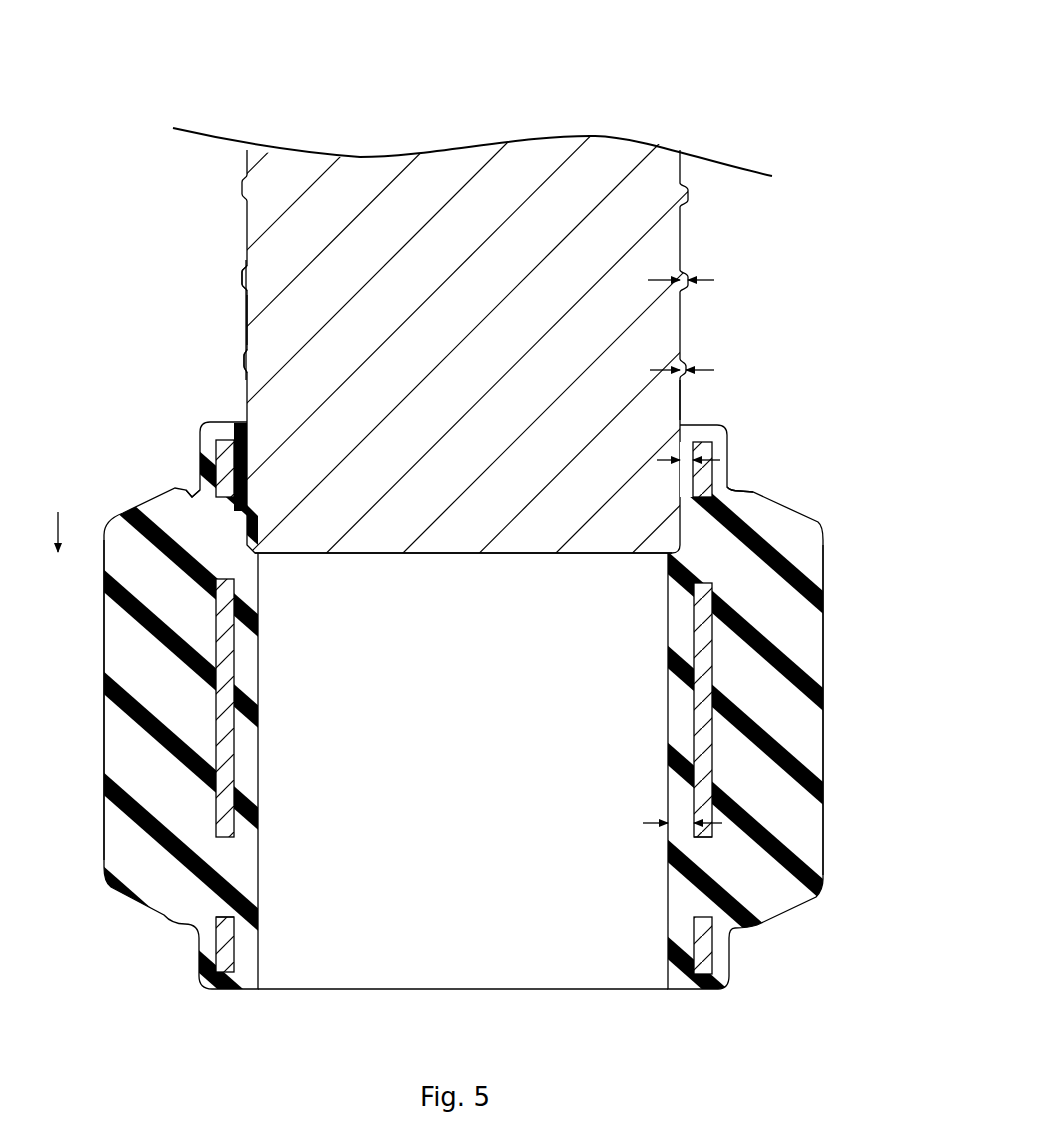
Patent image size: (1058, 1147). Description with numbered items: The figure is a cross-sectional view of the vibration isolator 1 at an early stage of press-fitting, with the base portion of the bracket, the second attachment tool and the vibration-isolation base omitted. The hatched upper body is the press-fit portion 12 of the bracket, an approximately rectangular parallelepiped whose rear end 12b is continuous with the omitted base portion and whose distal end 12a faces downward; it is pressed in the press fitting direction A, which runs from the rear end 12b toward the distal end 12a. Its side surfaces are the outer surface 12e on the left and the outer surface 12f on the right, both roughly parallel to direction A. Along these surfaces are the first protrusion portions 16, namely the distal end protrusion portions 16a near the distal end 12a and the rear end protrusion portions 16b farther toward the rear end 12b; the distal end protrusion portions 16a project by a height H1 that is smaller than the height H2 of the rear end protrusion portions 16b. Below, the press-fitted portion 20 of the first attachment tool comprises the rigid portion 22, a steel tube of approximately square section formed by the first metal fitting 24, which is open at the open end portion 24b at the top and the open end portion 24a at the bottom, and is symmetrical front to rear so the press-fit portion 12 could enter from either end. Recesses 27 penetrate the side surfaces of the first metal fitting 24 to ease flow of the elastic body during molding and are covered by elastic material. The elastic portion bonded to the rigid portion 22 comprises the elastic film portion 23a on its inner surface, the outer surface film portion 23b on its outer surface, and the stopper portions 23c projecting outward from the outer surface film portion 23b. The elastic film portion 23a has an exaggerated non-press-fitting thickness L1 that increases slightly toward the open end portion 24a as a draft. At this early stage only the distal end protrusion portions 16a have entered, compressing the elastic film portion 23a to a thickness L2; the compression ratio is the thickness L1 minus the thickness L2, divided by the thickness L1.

The vibration isolator 1 is at (742, 94).
The press-fit portion 12 is at (467, 546).
The distal end 12a is at (360, 557).
The rear end 12b is at (550, 148).
The outer surface 12e is at (247, 326).
The outer surface 12f is at (679, 396).
The first protrusion portions 16 is at (158, 244).
The distal end protrusion portions 16a is at (243, 368).
The rear end protrusion portions 16b is at (242, 282).
The press-fitted portion 20 is at (140, 447).
The rigid portion 22 is at (188, 628).
The elastic film portion 23a is at (237, 660).
The outer surface film portion 23b is at (720, 455).
The stopper portions 23c is at (810, 642).
The first metal fitting 24 is at (705, 640).
The open end portion 24a is at (718, 982).
The open end portion 24b is at (222, 436).
The recesses 27 is at (190, 492).
The height of distal end protrusion portions H1 is at (685, 368).
The height of rear end protrusion portions H2 is at (685, 278).
The thickness of elastic film portion L1 is at (688, 814).
The thickness of elastic film portion between distal end protrusion portion and rigi L2 is at (682, 478).
The press fitting direction A is at (58, 549).